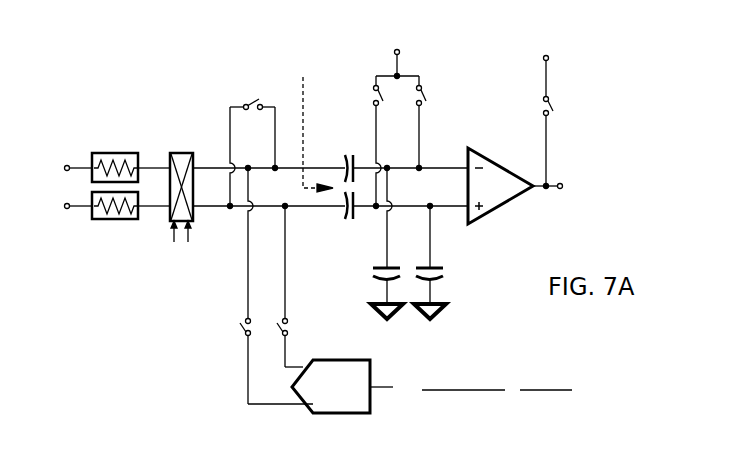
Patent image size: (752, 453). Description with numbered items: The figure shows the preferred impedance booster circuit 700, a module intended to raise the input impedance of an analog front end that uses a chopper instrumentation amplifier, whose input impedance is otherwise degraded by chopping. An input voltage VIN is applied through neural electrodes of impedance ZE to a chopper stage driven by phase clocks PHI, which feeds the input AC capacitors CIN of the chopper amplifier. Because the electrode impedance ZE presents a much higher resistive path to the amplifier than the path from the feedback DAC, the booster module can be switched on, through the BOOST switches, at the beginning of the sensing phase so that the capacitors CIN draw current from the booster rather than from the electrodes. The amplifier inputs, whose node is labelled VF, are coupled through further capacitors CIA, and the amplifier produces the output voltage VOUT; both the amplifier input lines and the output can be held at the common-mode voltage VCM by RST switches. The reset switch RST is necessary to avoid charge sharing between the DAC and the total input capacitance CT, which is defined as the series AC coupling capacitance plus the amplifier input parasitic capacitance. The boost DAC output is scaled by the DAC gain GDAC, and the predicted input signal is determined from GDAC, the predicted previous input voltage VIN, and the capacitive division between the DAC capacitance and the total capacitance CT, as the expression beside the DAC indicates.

The impedance booster circuit 700 is at (172, 100).
The input voltage VIN is at (56, 187).
The electrode impedance ZE is at (115, 190).
The chopper with phase clocks PHI is at (188, 222).
The reset switch RST is at (408, 142).
The total input capacitance CT is at (312, 120).
The input AC capacitor CIN is at (342, 190).
The common-mode voltage terminals VCM is at (468, 57).
The amplifier input capacitors CIA is at (407, 243).
The feedback voltage node / amplifier VF is at (480, 186).
The output voltage terminal VOUT is at (574, 187).
The boost switches BOOST is at (240, 362).
The DAC gain GDAC is at (342, 372).